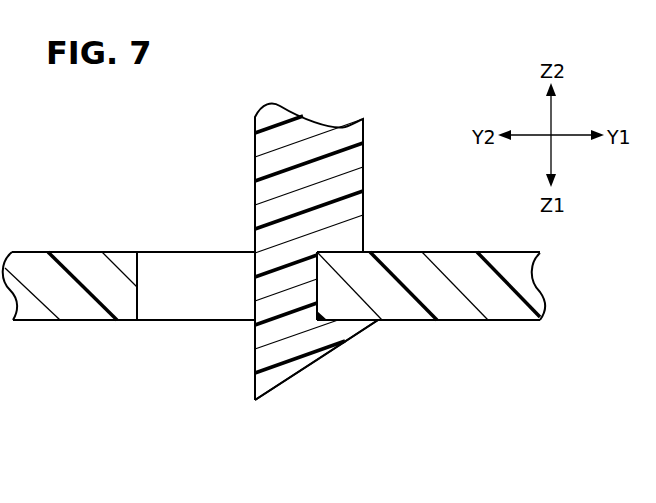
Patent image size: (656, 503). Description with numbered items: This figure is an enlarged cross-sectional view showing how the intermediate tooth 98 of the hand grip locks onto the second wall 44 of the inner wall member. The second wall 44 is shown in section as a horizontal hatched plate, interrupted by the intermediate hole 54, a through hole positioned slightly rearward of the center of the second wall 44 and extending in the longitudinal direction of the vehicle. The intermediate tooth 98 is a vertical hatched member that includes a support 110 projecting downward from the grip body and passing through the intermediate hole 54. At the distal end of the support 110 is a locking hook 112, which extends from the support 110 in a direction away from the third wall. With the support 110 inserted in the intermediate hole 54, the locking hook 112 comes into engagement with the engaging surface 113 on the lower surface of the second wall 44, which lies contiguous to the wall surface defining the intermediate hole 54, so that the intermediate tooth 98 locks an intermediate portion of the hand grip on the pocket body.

The second wall 44 is at (79, 264).
The intermediate hole 54 is at (190, 266).
The intermediate tooth 98 is at (365, 118).
The support 110 is at (260, 292).
The locking hook 112 is at (298, 373).
The engaging surface 113 is at (350, 323).